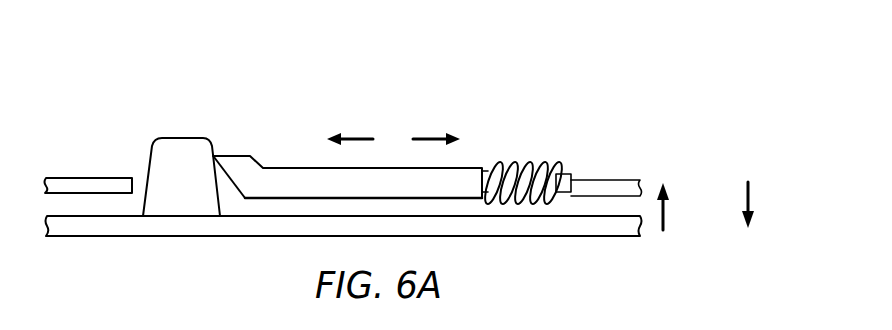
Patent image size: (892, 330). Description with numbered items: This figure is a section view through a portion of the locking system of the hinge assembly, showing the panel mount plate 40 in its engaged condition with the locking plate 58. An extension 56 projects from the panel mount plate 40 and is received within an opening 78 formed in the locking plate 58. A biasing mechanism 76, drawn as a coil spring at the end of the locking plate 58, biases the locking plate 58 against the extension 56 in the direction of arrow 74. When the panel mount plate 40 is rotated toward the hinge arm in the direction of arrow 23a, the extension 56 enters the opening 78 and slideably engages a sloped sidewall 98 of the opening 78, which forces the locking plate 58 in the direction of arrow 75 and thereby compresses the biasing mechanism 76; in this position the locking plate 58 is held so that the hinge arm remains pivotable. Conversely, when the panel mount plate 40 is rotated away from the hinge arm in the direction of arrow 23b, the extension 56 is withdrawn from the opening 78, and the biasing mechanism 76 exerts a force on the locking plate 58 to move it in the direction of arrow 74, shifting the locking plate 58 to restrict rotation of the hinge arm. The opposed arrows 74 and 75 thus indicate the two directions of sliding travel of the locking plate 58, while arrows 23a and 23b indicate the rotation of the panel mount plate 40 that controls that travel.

The panel mount plate 40 is at (522, 237).
The opening 78 is at (136, 177).
The extension 56 is at (178, 137).
The locking plate 58 is at (291, 167).
The sloped sidewall 98 is at (240, 193).
The biasing mechanism 76 is at (522, 162).
The arrow 74 is at (356, 136).
The arrow 75 is at (430, 136).
The arrow 23a is at (665, 219).
The arrow 23b is at (750, 192).